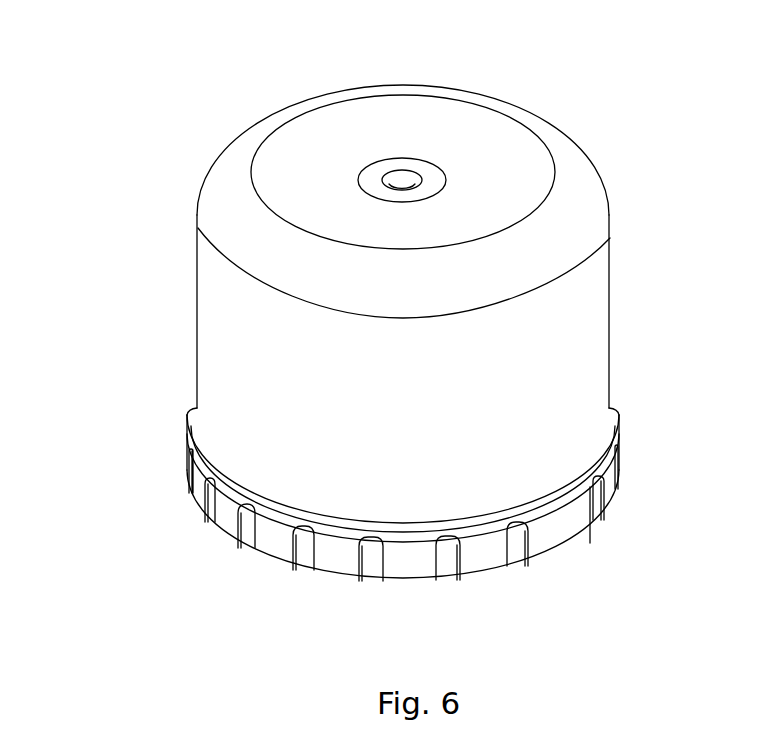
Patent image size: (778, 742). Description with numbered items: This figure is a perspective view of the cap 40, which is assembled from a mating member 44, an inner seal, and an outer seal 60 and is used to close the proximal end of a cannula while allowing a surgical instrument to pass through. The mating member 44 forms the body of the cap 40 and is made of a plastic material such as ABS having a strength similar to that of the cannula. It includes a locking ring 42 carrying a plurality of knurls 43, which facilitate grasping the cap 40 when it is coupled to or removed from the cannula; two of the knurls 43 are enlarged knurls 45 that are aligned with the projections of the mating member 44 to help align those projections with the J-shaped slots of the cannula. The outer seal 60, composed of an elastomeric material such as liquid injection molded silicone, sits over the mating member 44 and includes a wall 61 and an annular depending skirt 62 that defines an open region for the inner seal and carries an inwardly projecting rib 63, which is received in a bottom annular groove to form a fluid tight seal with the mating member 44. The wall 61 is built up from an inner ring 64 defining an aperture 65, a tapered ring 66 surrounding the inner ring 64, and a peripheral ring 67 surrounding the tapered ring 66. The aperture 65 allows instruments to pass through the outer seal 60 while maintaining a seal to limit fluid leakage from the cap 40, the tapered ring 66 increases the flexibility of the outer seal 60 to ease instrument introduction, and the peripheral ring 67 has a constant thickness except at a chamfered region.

The cap 40 is at (146, 180).
The locking ring 42 is at (284, 548).
The knurls 43 is at (408, 575).
The mating member 44 is at (620, 476).
The enlarged knurls 45 is at (582, 538).
The outer seal 60 is at (598, 262).
The wall 61 is at (532, 188).
The annular depending skirt 62 is at (572, 350).
The inwardly projecting rib 63 is at (469, 518).
The inner ring 64 is at (425, 168).
The aperture 65 is at (404, 178).
The tapered ring 66 is at (503, 137).
The peripheral ring 67 is at (571, 152).